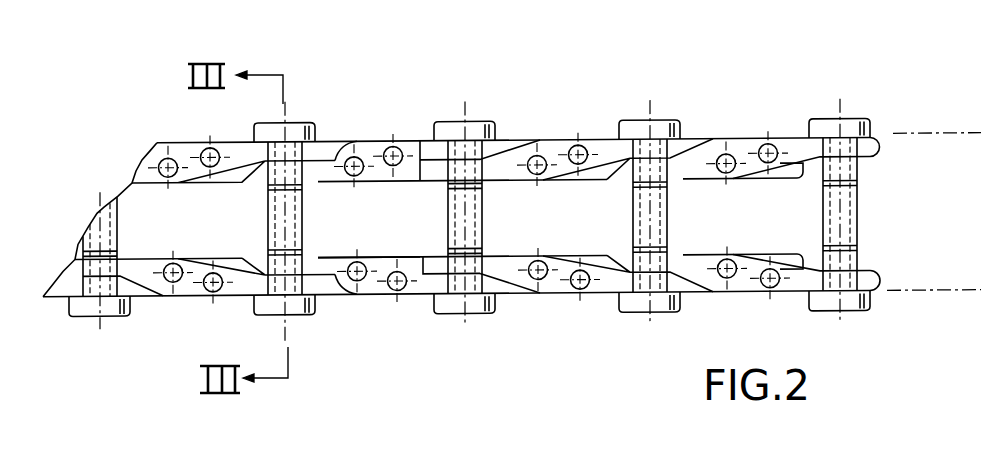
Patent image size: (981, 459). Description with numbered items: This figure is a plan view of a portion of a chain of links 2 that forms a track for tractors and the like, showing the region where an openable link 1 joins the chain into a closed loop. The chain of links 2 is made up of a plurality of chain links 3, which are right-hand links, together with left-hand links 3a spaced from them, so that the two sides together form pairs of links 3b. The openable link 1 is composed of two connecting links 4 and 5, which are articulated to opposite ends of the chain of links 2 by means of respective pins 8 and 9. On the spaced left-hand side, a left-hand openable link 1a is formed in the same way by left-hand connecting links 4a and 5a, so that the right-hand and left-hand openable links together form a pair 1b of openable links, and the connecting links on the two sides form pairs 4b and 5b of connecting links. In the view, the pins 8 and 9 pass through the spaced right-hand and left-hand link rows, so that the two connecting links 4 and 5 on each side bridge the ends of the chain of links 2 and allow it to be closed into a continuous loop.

The openable link 1 is at (368, 327).
The left-hand openable link 1a is at (392, 120).
The pair of openable links 1b is at (393, 237).
The chain of links 2 is at (106, 143).
The chain links 3 is at (163, 300).
The left-hand links 3a is at (160, 152).
The pairs of links 3b is at (212, 238).
The connecting link 4 is at (331, 302).
The left-hand connecting link 4a is at (329, 147).
The pair of connecting links 4b is at (345, 237).
The connecting link 5 is at (430, 300).
The left-hand connecting link 5a is at (442, 153).
The pair of connecting links 5b is at (445, 237).
The pin 8 is at (287, 320).
The pin 9 is at (482, 300).